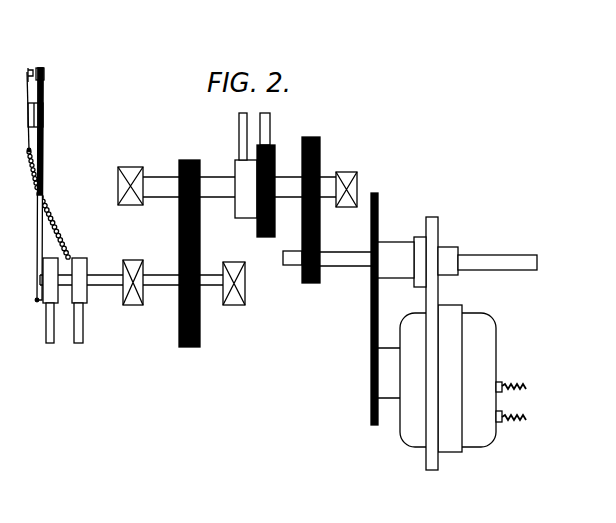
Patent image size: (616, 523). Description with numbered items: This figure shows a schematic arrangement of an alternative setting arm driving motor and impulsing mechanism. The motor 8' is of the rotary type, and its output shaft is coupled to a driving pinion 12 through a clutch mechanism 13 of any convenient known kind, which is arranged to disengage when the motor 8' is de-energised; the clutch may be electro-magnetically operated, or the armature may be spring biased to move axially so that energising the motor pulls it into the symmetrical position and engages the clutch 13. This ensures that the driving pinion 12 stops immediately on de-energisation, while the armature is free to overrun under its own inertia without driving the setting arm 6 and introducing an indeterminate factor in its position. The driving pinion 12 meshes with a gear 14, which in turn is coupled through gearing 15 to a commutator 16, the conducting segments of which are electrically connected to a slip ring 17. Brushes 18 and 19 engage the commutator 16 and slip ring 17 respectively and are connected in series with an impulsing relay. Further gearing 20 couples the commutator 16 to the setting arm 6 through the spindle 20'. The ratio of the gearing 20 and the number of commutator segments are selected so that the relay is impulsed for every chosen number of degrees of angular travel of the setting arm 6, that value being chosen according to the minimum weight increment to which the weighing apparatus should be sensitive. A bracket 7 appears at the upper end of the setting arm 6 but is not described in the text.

The setting arm 6 is at (45, 111).
The bracket 7 is at (29, 69).
The motor 8' is at (457, 346).
The driving pinion 12 is at (372, 428).
The clutch mechanism 13 is at (383, 400).
The gear 14 is at (380, 209).
The gearing 15 is at (320, 247).
The commutator 16 is at (266, 237).
The slip ring 17 is at (236, 218).
The brush 18 is at (270, 125).
The brush 19 is at (239, 125).
The gearing 20 is at (167, 253).
The spindle 20' is at (142, 300).